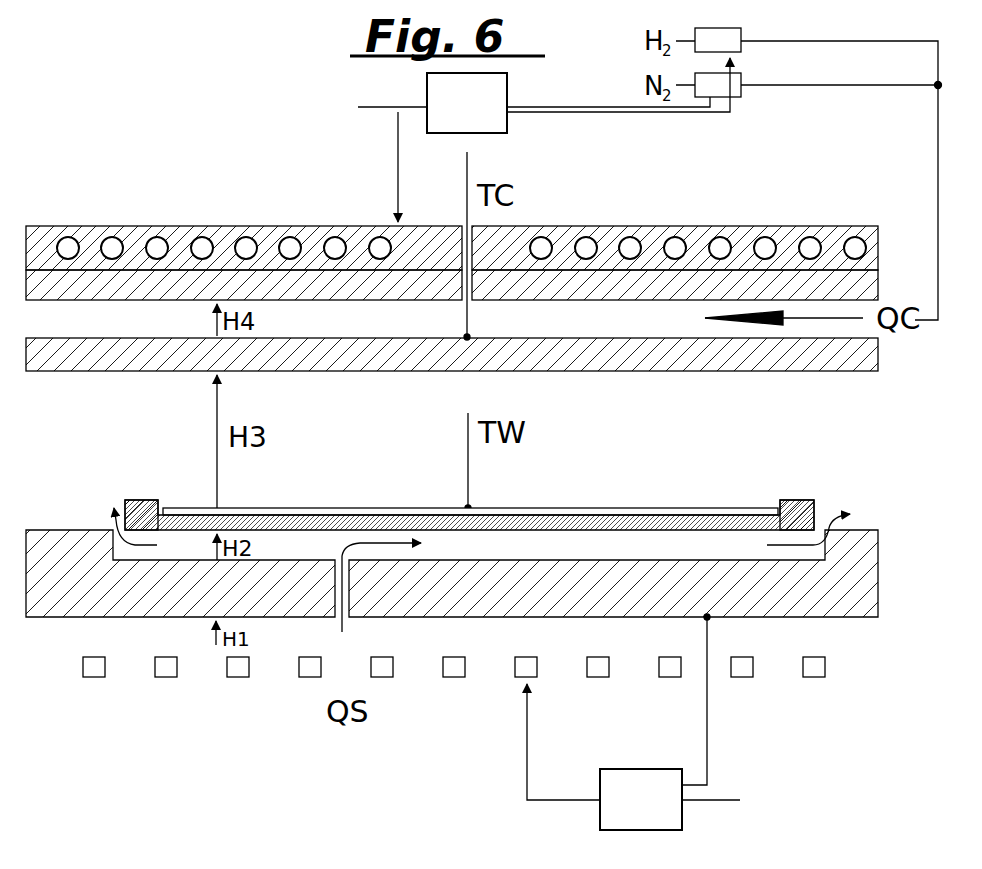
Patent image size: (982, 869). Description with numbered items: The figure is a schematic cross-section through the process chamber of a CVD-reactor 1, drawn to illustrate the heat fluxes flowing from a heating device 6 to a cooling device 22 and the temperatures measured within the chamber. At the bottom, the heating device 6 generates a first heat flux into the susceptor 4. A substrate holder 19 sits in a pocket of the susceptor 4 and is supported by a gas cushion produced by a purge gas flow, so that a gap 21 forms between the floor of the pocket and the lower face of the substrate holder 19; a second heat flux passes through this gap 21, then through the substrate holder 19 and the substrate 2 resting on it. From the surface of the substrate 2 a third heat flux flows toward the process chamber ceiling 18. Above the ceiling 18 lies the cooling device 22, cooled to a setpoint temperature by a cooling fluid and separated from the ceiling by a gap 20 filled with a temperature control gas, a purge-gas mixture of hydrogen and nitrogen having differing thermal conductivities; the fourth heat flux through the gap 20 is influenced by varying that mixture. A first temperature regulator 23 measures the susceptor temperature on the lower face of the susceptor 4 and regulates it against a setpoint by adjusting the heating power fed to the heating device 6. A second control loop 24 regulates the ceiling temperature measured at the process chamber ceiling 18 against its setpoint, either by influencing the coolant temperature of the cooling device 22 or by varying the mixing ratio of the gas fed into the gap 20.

The processing apparatus 1 is at (796, 205).
The substrate 2 is at (641, 509).
The susceptor 4 is at (840, 605).
The heating device 6 is at (596, 664).
The process chamber ceiling 18 is at (660, 350).
The substrate holder 19 is at (581, 526).
The gap 20 is at (583, 325).
The gap 21 is at (700, 546).
The cooling device 22 is at (176, 228).
The first temperature regulator 23 is at (636, 788).
The second control loop 24 is at (488, 128).